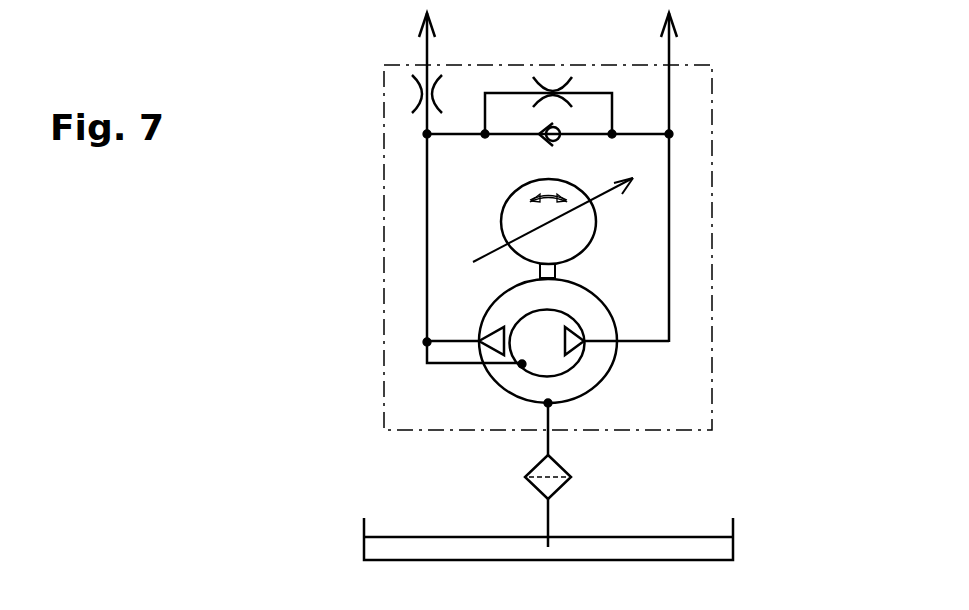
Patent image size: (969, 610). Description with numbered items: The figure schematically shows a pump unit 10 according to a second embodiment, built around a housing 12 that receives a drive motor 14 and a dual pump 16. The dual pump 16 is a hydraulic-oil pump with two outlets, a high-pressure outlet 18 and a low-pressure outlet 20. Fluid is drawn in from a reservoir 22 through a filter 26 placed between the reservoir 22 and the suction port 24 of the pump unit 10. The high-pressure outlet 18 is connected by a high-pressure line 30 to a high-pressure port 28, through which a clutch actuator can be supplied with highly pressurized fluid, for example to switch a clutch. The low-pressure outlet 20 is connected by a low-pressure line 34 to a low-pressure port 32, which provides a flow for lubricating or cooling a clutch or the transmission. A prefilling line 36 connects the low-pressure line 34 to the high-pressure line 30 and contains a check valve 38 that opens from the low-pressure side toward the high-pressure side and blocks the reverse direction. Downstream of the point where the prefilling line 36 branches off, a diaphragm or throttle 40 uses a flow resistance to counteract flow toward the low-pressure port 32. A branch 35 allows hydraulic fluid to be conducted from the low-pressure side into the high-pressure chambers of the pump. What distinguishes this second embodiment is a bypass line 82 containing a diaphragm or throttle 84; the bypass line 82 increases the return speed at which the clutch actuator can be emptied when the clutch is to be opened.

The pump unit 10 is at (777, 45).
The housing 12 is at (712, 207).
The drive motor 14 is at (597, 229).
The dual pump 16 is at (593, 288).
The high-pressure outlet 18 is at (584, 343).
The low-pressure outlet 20 is at (479, 333).
The reservoir 22 is at (733, 526).
The suction port 24 is at (548, 433).
The filter 26 is at (538, 488).
The high-pressure port 28 is at (669, 65).
The high-pressure line 30 is at (669, 306).
The low-pressure port 32 is at (427, 65).
The low-pressure line 34 is at (427, 188).
The branch 35 is at (458, 363).
The prefilling line 36 is at (460, 134).
The check valve 38 is at (560, 141).
The diaphragm or throttle 40 is at (405, 90).
The bypass line 82 is at (597, 93).
The diaphragm or throttle 84 is at (553, 90).